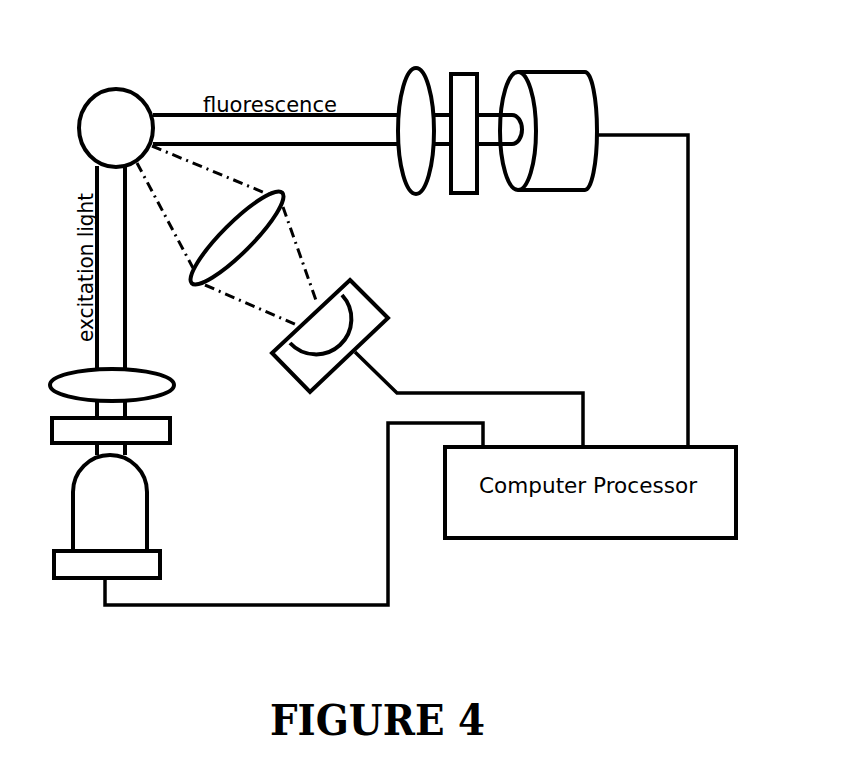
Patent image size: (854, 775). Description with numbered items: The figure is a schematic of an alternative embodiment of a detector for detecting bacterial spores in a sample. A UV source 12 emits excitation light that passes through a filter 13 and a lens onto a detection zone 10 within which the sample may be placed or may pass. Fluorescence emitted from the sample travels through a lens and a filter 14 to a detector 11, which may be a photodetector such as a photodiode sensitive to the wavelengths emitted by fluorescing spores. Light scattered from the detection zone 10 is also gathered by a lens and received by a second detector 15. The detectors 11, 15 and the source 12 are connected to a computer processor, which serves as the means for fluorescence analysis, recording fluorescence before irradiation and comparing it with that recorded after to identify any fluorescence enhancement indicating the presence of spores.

The sample cuvette 10 is at (118, 89).
The fluorescence detector 11 is at (574, 72).
The excitation light source 12 is at (147, 503).
The excitation filter 13 is at (170, 420).
The emission filter 14 is at (468, 73).
The scattered light detector 15 is at (372, 302).